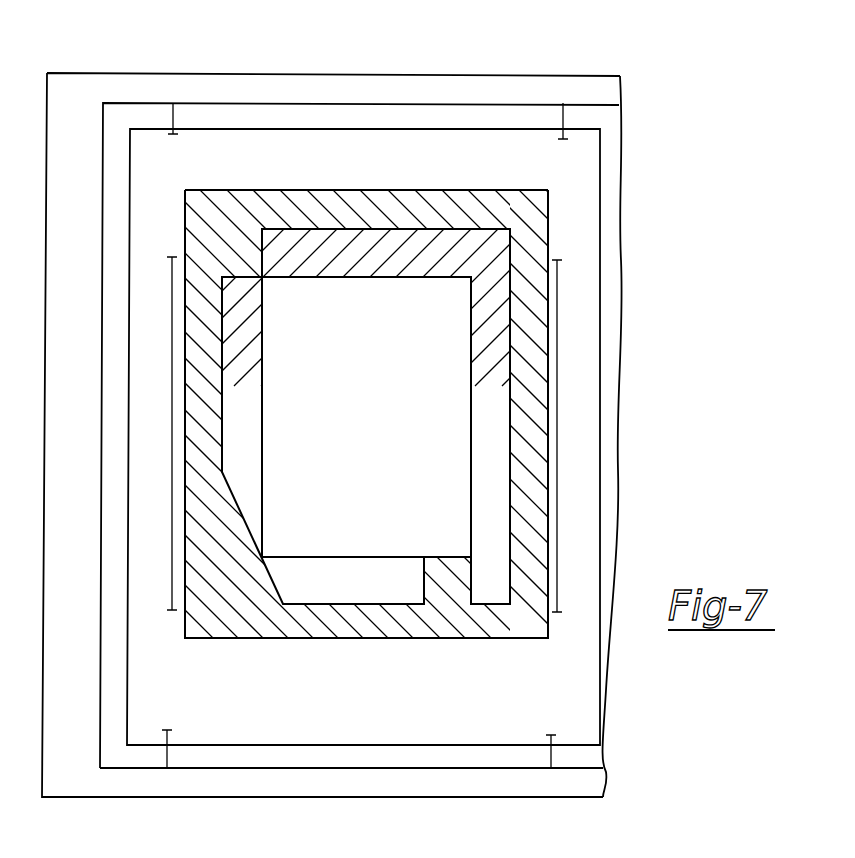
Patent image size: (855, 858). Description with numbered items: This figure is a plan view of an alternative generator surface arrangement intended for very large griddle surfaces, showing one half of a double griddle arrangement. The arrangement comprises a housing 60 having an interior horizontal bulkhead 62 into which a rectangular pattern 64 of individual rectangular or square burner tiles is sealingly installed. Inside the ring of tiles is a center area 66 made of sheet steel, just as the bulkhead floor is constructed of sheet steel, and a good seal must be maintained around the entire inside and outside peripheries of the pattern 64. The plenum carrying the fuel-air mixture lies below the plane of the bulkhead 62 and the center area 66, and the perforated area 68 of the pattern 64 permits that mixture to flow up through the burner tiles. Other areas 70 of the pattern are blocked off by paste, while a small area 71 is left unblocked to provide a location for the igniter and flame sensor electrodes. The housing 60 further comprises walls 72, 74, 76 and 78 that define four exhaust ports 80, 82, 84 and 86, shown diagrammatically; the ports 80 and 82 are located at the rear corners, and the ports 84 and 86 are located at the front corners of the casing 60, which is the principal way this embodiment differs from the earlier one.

The housing 60 is at (372, 783).
The interior horizontal bulkhead 62 is at (540, 413).
The rectangular pattern of burner tiles 64 is at (280, 447).
The center area 66 is at (383, 366).
The perforated area of the pattern 68 is at (283, 190).
The blocked-off areas 70 is at (358, 248).
The unblocked area 71 is at (447, 567).
The wall 72 is at (383, 103).
The wall 74 is at (278, 766).
The wall 76 is at (168, 290).
The wall 78 is at (558, 346).
The exhaust port 80 is at (195, 175).
The exhaust port 82 is at (542, 177).
The exhaust port 84 is at (190, 682).
The exhaust port 86 is at (570, 695).